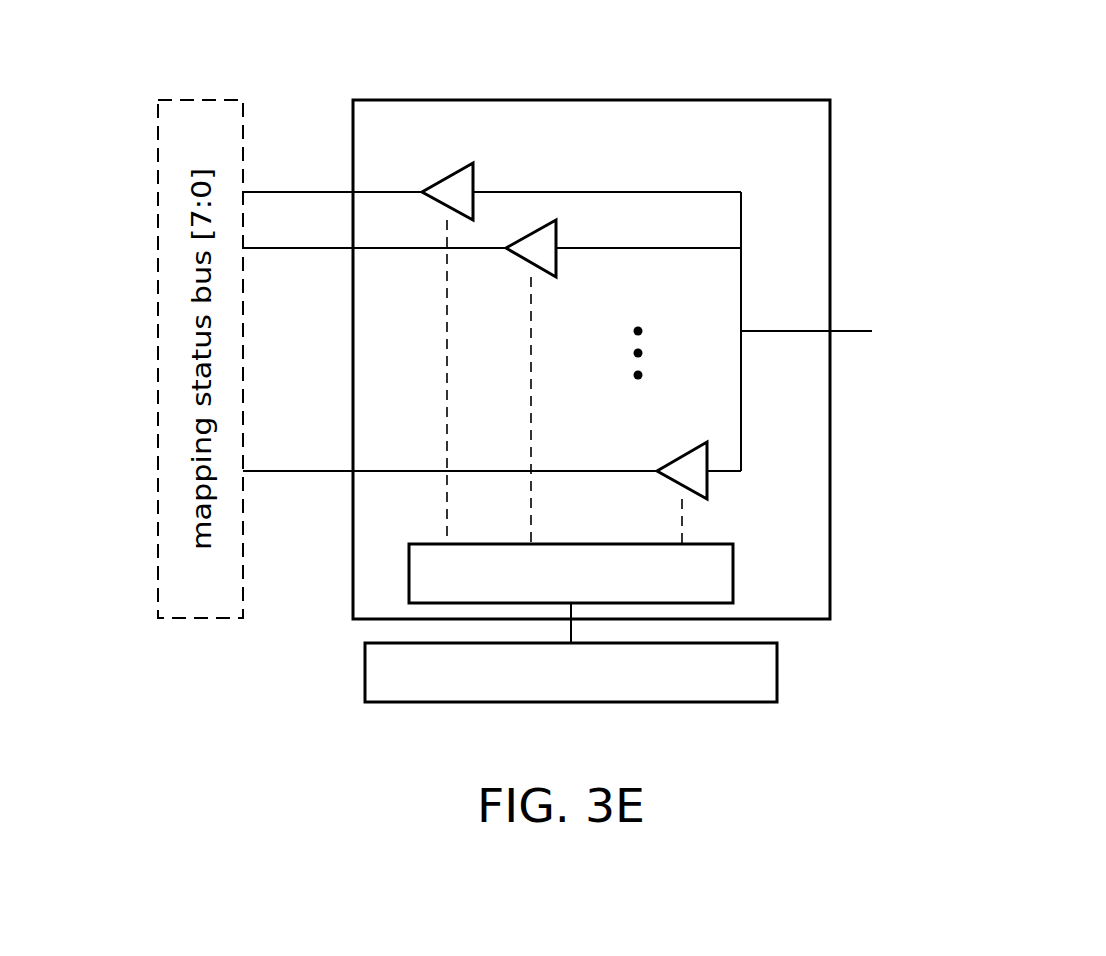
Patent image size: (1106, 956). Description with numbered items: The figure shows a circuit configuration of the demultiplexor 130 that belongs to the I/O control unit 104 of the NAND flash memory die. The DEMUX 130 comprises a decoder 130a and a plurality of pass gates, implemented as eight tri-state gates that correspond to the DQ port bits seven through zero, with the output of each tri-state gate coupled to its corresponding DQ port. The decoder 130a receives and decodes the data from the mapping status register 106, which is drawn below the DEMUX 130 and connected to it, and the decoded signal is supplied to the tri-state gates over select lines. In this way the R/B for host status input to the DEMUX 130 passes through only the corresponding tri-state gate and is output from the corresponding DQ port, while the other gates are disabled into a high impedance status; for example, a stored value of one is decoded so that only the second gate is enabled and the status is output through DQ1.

The I/O control unit 104 is at (1022, 78).
The demultiplexor 130 is at (718, 100).
The decoder 130a is at (733, 574).
The mapping status register 106 is at (777, 673).